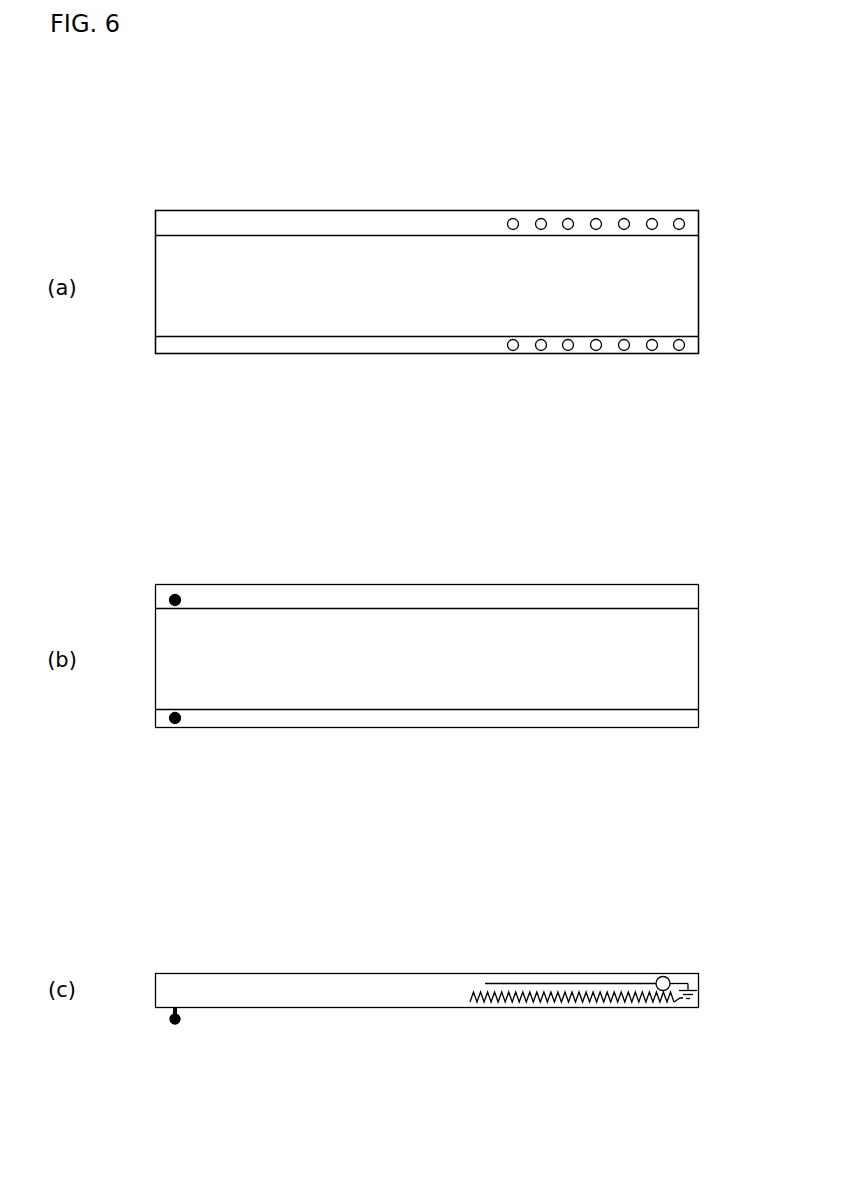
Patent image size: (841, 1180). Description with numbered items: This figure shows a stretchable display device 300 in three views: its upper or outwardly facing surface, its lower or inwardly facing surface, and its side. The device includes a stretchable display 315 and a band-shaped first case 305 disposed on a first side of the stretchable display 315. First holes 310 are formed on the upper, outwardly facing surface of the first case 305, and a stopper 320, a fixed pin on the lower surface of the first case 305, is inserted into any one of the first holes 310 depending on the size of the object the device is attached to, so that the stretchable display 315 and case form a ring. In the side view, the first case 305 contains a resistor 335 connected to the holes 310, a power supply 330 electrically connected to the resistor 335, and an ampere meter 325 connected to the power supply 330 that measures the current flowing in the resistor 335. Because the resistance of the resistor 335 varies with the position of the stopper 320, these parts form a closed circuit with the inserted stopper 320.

The stretchable display device 300 is at (424, 186).
The first case 305 is at (597, 210).
The first holes 310 is at (513, 218).
The stretchable display 315 is at (699, 257).
The stopper 320 is at (177, 594).
The ampere meter 325 is at (661, 976).
The power supply 330 is at (694, 976).
The resistor 335 is at (622, 1008).